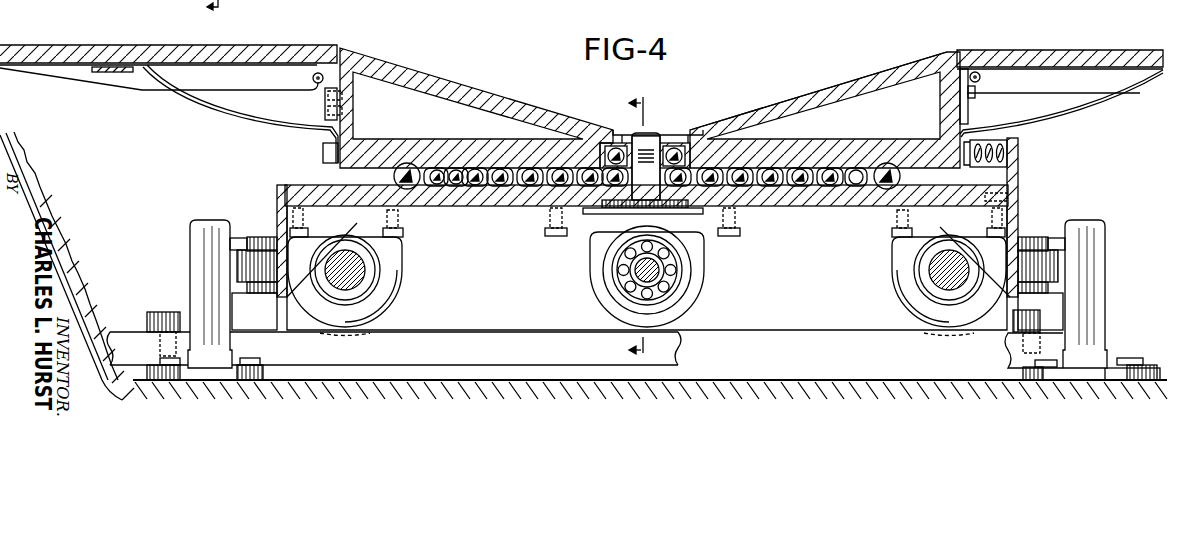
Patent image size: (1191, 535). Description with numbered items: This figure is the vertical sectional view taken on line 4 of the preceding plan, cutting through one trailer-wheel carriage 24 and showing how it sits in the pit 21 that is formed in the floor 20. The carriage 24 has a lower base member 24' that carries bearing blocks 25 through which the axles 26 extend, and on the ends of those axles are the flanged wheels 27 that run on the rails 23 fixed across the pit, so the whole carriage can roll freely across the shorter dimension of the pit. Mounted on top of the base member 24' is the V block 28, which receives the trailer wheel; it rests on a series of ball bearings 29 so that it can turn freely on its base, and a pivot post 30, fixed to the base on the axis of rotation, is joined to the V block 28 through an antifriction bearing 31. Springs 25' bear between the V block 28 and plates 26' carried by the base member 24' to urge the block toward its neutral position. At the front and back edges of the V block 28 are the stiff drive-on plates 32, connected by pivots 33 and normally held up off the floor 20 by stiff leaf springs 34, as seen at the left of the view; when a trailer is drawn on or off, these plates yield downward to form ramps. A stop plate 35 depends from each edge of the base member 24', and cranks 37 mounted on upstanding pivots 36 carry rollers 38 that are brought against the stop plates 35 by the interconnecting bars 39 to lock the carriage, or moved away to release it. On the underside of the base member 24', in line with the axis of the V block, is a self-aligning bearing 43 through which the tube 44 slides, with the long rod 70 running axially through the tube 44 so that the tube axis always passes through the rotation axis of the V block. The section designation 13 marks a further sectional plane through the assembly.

The section line 4— 4 is at (206, 11).
The section line 13 is at (623, 229).
The floor 20 is at (10, 83).
The pit 21 is at (106, 166).
The rails 23 is at (770, 348).
The carriage 24 is at (650, 92).
The base member 24' is at (1021, 181).
The bearing blocks 25 is at (647, 236).
The springs 25' is at (1005, 132).
The axles 26 is at (647, 270).
The plates 26' is at (1047, 215).
The flanged wheels 27 is at (397, 300).
The V block 28 is at (820, 92).
The ball bearings 29 is at (407, 163).
The pivot post 30 is at (641, 188).
The antifriction bearing 31 is at (675, 150).
The drive-on plate 32 is at (115, 49).
The pivots 33 is at (319, 72).
The leaf springs 34 is at (190, 107).
The stop plate 35 is at (284, 233).
The upstanding pivots 36 is at (200, 227).
The cranks 37 is at (235, 245).
The rollers 38 is at (238, 273).
The bars 39 is at (460, 350).
The self-aligning bearing 43 is at (594, 290).
The tube 44 is at (664, 282).
The rod 70 is at (658, 268).